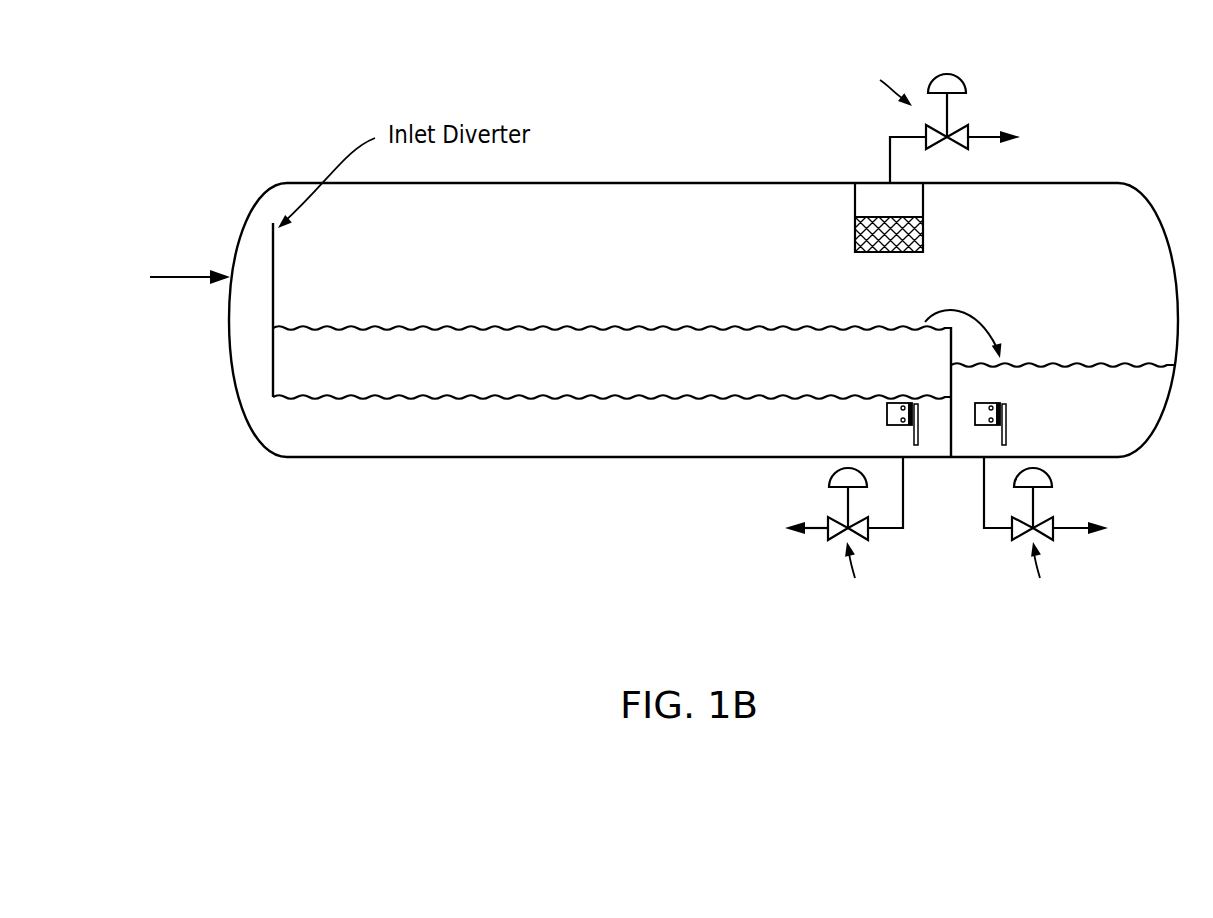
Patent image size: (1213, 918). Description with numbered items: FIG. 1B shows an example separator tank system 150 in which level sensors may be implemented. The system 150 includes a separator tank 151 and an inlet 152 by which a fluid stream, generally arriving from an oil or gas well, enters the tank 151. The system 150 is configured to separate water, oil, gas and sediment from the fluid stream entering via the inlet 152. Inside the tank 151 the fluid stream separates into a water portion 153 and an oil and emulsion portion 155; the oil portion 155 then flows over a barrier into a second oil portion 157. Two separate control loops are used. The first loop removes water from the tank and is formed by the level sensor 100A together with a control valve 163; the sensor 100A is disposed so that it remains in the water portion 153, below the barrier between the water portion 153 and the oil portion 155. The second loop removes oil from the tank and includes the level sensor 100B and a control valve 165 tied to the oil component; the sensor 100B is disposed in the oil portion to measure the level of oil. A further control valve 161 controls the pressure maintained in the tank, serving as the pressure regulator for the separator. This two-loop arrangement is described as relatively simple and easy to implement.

The system 150 is at (692, 122).
The separator tank 151 is at (216, 446).
The inlet 152 is at (250, 214).
The water portion 153 is at (450, 437).
The oil and emulsion portion 155 is at (443, 372).
The second oil portion 157 is at (1130, 440).
The control valve 161 is at (948, 73).
The control valve 163 is at (828, 484).
The control valve 165 is at (1053, 483).
The level sensor 100A is at (885, 412).
The level sensor 100B is at (1003, 405).